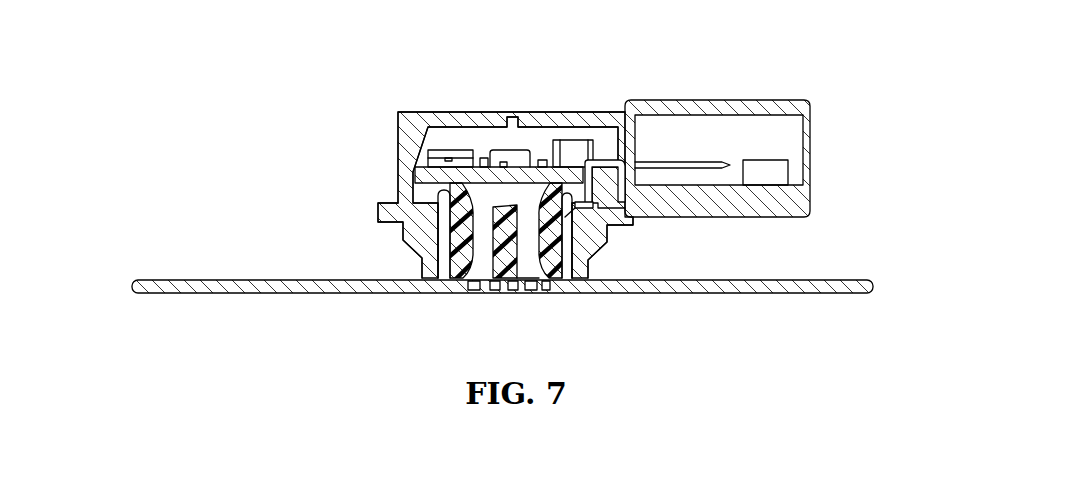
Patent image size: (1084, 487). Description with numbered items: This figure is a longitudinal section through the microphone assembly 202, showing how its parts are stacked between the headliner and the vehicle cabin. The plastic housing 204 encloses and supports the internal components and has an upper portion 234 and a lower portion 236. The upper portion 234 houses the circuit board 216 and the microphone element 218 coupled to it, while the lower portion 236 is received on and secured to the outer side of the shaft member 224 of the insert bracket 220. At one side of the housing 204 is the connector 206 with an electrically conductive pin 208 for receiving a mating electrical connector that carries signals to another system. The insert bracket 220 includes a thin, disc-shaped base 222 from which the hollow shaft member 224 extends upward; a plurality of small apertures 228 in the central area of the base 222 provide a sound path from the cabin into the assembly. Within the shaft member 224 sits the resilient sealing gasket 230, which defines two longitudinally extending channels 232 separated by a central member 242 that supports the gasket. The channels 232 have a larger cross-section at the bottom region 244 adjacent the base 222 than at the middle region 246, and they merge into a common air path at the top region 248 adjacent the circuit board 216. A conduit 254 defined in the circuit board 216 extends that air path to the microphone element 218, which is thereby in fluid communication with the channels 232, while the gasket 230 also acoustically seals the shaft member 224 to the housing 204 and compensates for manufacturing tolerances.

The microphone assembly 202 is at (275, 101).
The housing 204 is at (396, 111).
The connector 206 is at (737, 101).
The electrically conductive pin 208 is at (714, 162).
The circuit board 216 is at (563, 155).
The microphone element 218 is at (507, 151).
The insert bracket 220 is at (213, 262).
The base 222 is at (812, 294).
The shaft member 224 is at (573, 263).
The apertures 228 is at (483, 288).
The sealing gasket 230 is at (553, 242).
The channel 232 is at (528, 228).
The upper portion 234 is at (400, 158).
The lower portion 236 is at (420, 220).
The central member 242 is at (493, 250).
The bottom region 244 is at (528, 268).
The middle region 246 is at (475, 229).
The top region 248 is at (505, 194).
The conduit 254 is at (502, 172).